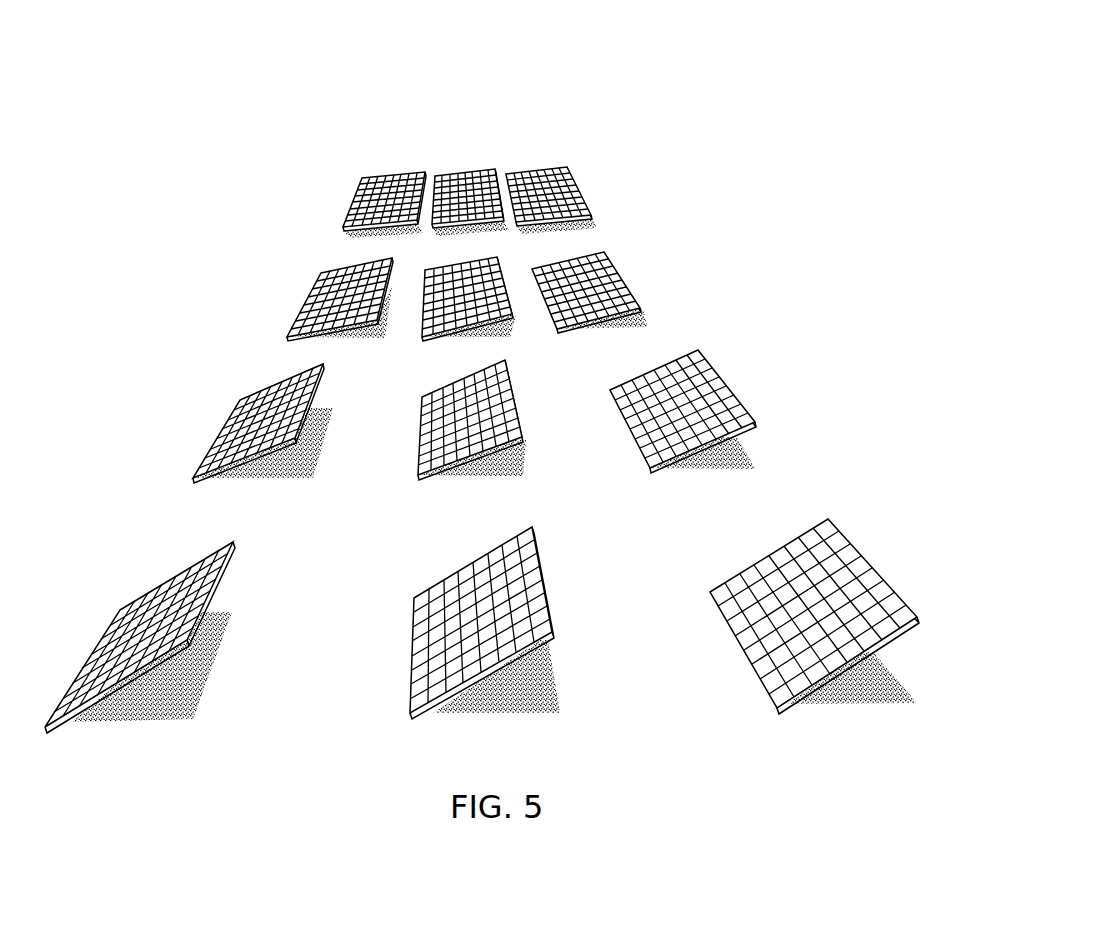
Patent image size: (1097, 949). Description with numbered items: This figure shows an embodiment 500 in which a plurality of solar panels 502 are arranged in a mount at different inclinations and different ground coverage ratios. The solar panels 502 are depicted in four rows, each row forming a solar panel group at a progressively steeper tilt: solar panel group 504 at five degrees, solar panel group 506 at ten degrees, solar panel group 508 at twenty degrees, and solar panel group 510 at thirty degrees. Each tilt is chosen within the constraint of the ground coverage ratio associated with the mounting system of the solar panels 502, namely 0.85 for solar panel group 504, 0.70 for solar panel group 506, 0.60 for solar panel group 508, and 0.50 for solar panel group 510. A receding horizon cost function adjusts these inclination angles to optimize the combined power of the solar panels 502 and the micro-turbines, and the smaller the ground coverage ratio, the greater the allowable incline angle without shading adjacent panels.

The embodiment 500 is at (712, 45).
The solar panels 502 is at (567, 152).
The solar panel group 504 is at (573, 167).
The solar panel group 506 is at (610, 252).
The solar panel group 508 is at (697, 346).
The solar panel group 510 is at (845, 507).